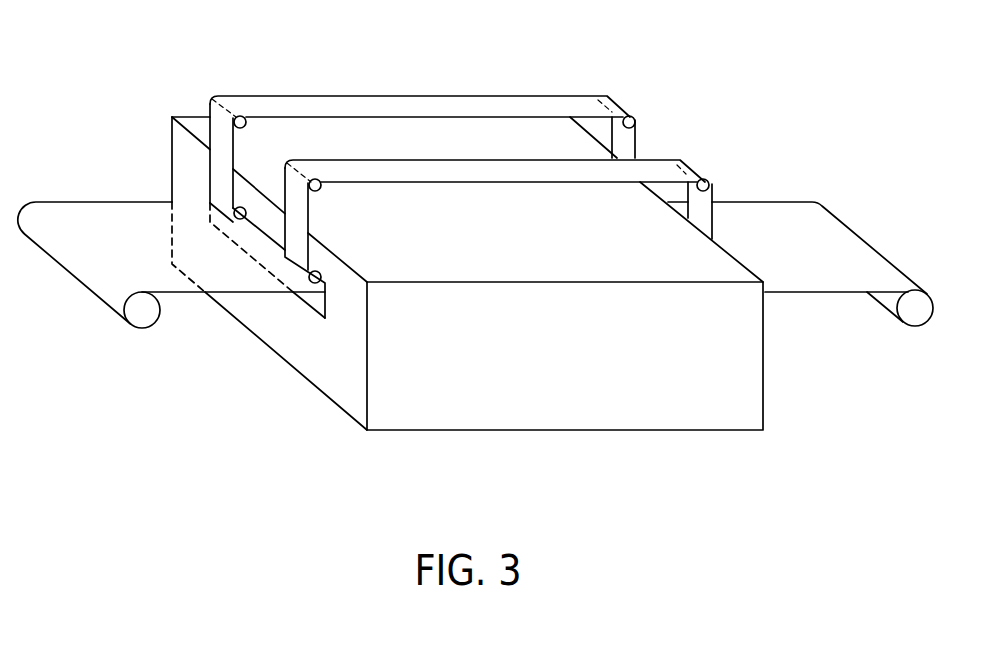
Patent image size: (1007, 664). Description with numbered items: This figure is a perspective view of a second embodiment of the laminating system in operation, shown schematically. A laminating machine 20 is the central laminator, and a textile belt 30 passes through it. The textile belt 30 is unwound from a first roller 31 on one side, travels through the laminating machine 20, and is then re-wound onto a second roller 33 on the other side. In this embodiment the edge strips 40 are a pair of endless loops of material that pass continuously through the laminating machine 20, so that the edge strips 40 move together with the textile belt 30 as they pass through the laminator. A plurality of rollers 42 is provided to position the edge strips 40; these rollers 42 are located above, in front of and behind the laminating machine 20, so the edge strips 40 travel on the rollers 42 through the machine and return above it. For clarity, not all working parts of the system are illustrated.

The laminating machine 20 is at (655, 400).
The textile belt 30 is at (55, 213).
The first roller 31 is at (142, 317).
The second roller 33 is at (914, 315).
The edge strips 40 is at (425, 167).
The rollers 42 is at (238, 116).